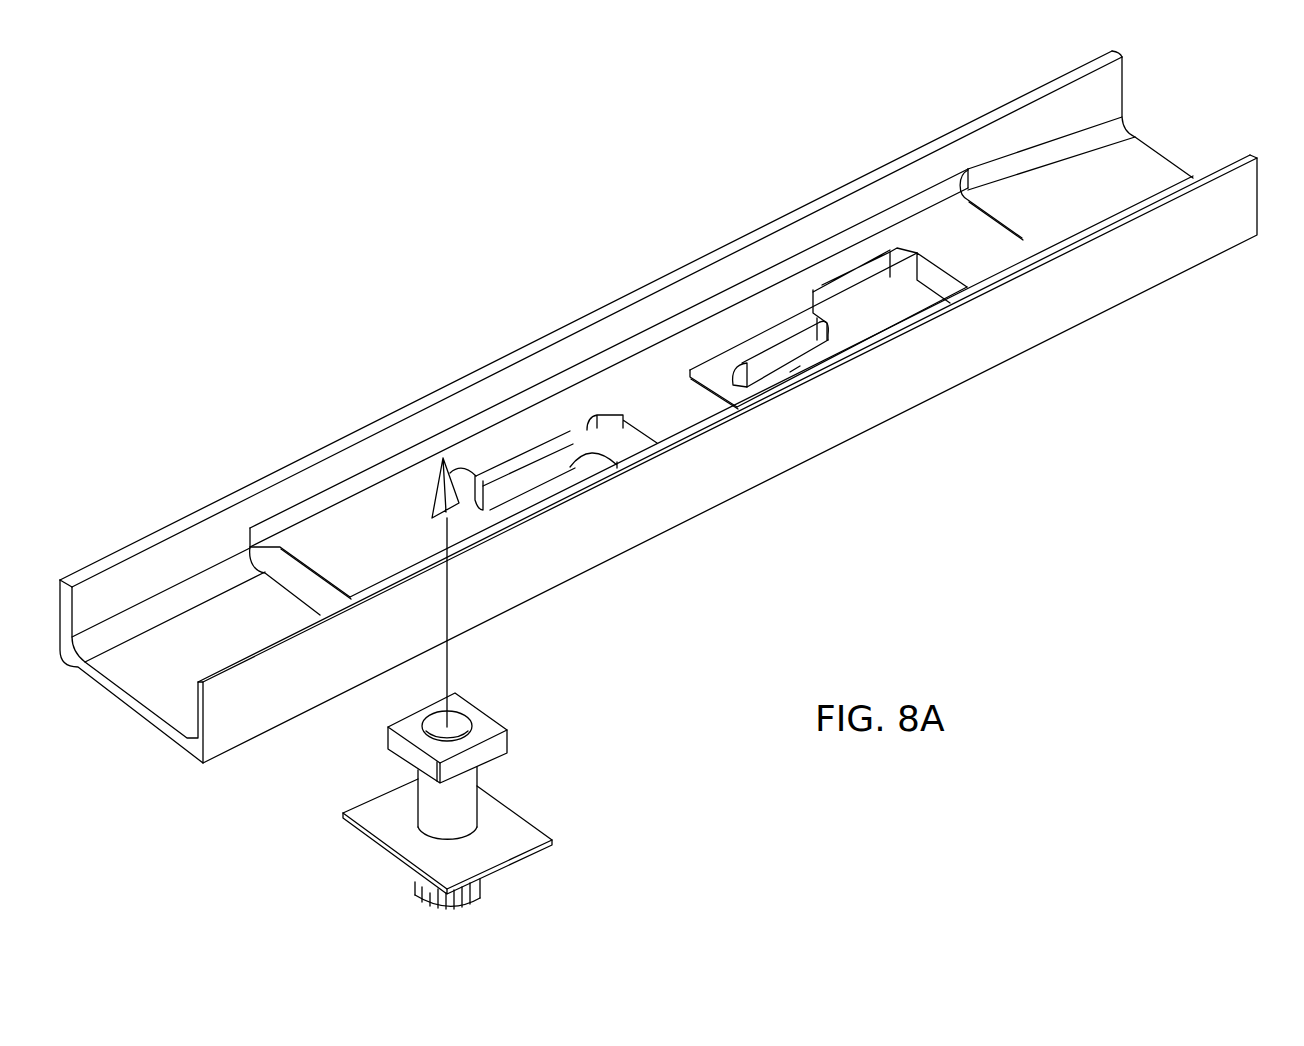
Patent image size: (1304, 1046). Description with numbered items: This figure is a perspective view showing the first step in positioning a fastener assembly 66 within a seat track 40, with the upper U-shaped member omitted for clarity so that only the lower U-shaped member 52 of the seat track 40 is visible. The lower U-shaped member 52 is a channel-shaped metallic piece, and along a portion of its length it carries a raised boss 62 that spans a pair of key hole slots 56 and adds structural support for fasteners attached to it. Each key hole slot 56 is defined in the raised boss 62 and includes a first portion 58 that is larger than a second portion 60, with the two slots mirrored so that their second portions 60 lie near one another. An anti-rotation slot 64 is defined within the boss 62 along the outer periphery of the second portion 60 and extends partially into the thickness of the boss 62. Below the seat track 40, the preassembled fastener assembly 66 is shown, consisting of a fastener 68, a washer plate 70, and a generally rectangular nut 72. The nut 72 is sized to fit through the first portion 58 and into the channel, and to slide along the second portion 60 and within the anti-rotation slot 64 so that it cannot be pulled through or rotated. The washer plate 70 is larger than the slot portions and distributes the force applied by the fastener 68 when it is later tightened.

The seat track 40 is at (838, 172).
The lower U-shaped member 52 is at (1025, 330).
The key hole slot 56 is at (590, 437).
The first portion 58 is at (876, 312).
The second portion 60 is at (790, 372).
The raised boss 62 is at (641, 397).
The anti-rotation slot 64 is at (726, 385).
The fastener assembly 66 is at (360, 850).
The fastener 68 is at (478, 897).
The washer plate 70 is at (508, 830).
The nut 72 is at (490, 722).